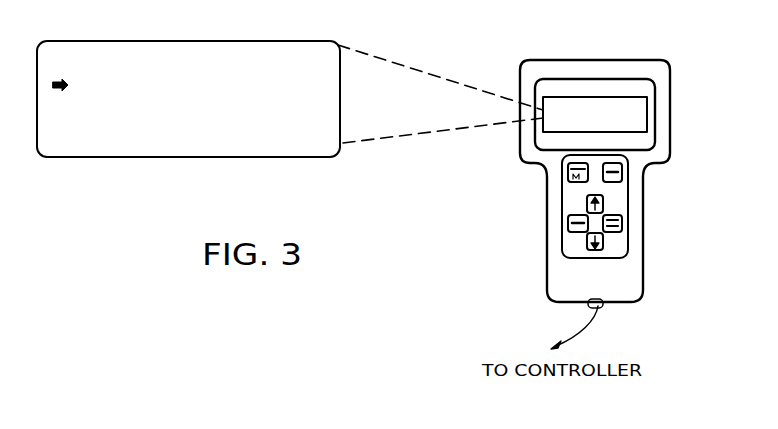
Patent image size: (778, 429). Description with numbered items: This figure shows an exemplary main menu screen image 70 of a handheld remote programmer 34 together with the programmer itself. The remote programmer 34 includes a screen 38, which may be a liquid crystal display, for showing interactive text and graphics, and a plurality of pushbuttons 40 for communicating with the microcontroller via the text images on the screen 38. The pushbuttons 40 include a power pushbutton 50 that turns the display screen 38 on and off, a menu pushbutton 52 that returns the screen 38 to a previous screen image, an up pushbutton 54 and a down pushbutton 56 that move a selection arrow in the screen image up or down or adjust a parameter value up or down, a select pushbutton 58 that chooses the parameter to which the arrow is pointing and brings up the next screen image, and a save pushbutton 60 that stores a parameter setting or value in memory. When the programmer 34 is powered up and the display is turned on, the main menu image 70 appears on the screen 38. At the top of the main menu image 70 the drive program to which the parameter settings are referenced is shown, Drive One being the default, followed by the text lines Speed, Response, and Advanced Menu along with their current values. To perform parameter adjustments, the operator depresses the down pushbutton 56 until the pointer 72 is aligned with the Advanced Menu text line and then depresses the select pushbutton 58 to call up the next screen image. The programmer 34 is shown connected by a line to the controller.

The remote programmer 34 is at (668, 123).
The screen 38 is at (580, 88).
The pushbuttons 40 is at (620, 200).
The power pushbutton 50 is at (575, 179).
The menu pushbutton 52 is at (588, 232).
The up pushbutton 54 is at (587, 202).
The down pushbutton 56 is at (603, 255).
The select pushbutton 58 is at (622, 228).
The save pushbutton 60 is at (622, 175).
The main menu image 70 is at (77, 147).
The pointer 72 is at (63, 91).